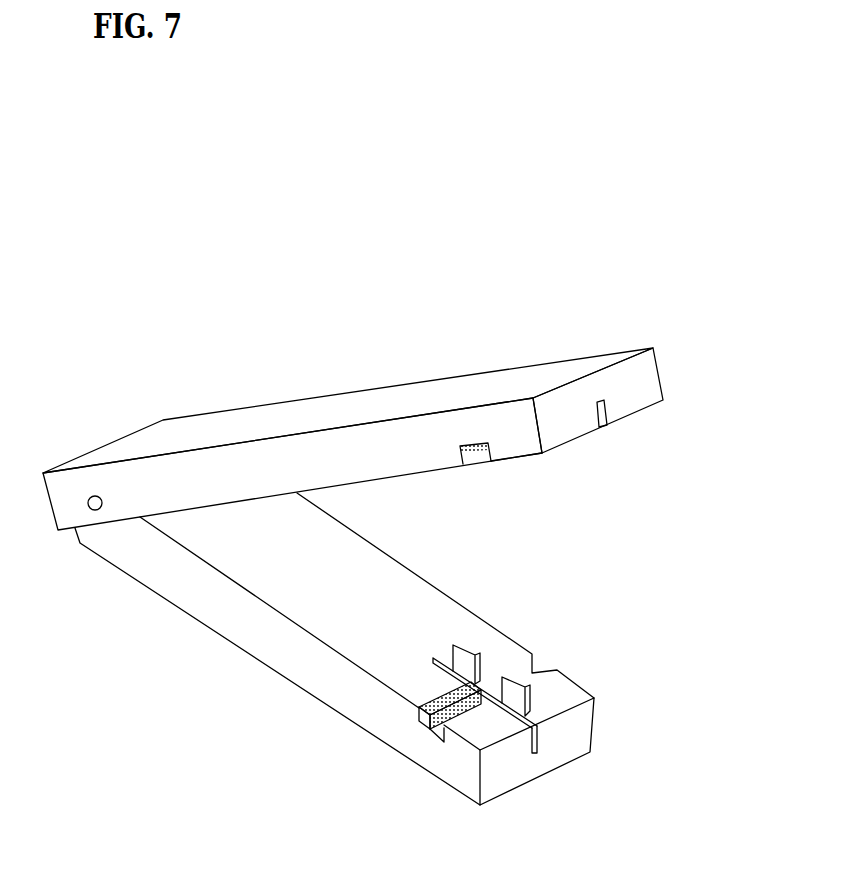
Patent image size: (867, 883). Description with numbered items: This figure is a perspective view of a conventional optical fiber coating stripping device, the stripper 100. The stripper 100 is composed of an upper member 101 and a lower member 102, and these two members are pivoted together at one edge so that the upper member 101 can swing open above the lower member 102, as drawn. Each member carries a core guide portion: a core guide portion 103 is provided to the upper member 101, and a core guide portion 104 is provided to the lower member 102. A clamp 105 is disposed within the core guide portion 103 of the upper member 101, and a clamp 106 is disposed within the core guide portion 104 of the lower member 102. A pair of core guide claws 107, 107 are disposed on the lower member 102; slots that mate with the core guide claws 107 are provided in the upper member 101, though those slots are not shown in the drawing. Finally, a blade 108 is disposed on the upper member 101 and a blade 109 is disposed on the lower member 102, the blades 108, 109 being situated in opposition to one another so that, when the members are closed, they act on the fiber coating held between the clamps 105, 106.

The stripper 100 is at (544, 194).
The upper member 101 is at (370, 382).
The lower member 102 is at (273, 686).
The core guide portion 103 is at (490, 462).
The core guide portion 104 is at (443, 735).
The clamp 105 is at (463, 464).
The clamp 106 is at (428, 726).
The core guide claw 107 is at (472, 655).
The blade 108 is at (607, 410).
The blade 109 is at (538, 739).